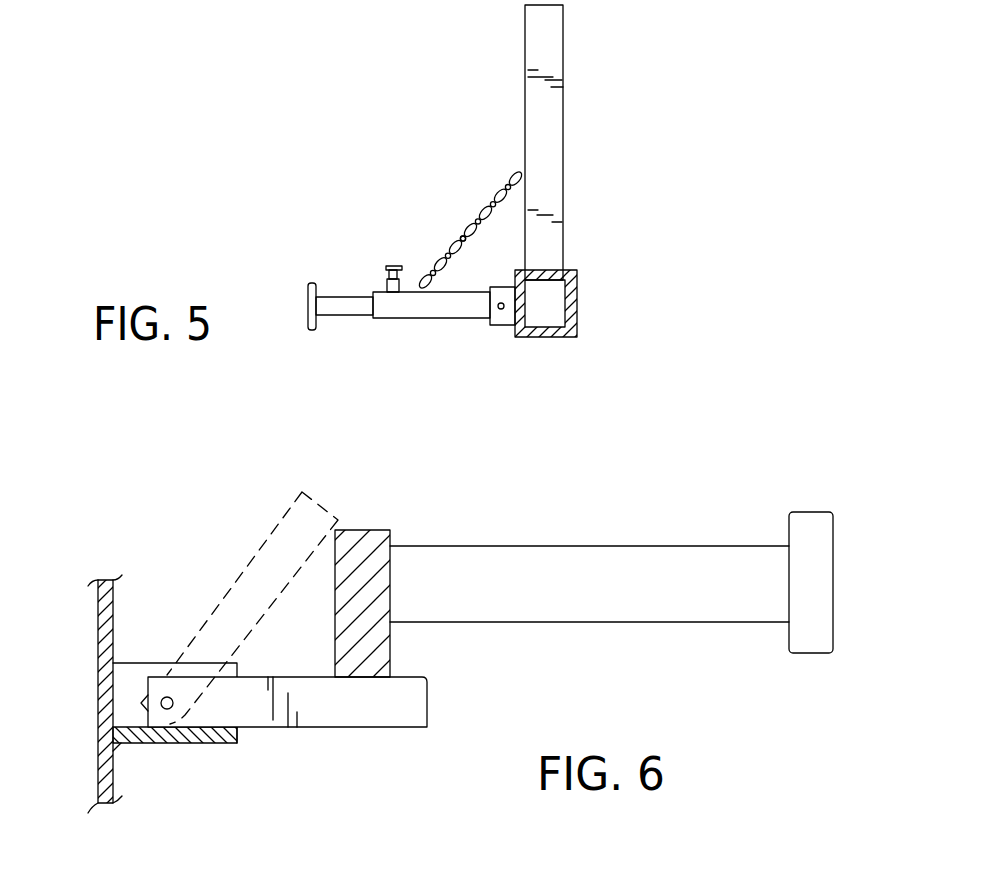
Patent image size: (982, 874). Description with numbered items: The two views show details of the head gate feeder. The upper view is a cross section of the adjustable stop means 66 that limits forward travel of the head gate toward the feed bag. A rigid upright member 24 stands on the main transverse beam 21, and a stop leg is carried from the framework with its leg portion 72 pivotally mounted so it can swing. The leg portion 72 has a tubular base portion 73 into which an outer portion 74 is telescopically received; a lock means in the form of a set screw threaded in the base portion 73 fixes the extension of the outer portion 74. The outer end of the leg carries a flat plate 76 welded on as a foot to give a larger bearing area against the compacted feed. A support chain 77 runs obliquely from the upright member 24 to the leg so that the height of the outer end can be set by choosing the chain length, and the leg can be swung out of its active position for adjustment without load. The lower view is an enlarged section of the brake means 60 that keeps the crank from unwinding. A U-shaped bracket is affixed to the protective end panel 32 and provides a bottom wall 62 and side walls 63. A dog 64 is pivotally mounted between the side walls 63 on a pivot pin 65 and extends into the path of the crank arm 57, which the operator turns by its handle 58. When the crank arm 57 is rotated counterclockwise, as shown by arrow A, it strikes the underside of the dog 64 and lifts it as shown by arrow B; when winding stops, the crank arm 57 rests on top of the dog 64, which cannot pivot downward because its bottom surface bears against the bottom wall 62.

In FIG. 5, the main transverse beam 21 is at (578, 307).
In FIG. 5, the rigid upright member 24 is at (553, 192).
In FIG. 5, the adjustable stop means 66 is at (458, 222).
In FIG. 5, the leg portion 72 is at (427, 320).
In FIG. 5, the base portion 73 is at (387, 268).
In FIG. 5, the outer portion 74 is at (397, 265).
In FIG. 5, the flat plate 76 is at (307, 305).
In FIG. 5, the support chain 77 is at (485, 206).
In FIG. 6, the protective end panel 32 is at (98, 643).
In FIG. 6, the crank arm 57 is at (388, 540).
In FIG. 6, the handle 58 is at (620, 608).
In FIG. 6, the brake means 60 is at (247, 553).
In FIG. 6, the bottom wall 62 is at (202, 743).
In FIG. 6, the side wall 63 is at (130, 677).
In FIG. 6, the dog 64 is at (367, 712).
In FIG. 6, the pivot pin 65 is at (167, 709).
In FIG. 6, the arrow A is at (362, 477).
In FIG. 6, the arrow B is at (283, 602).